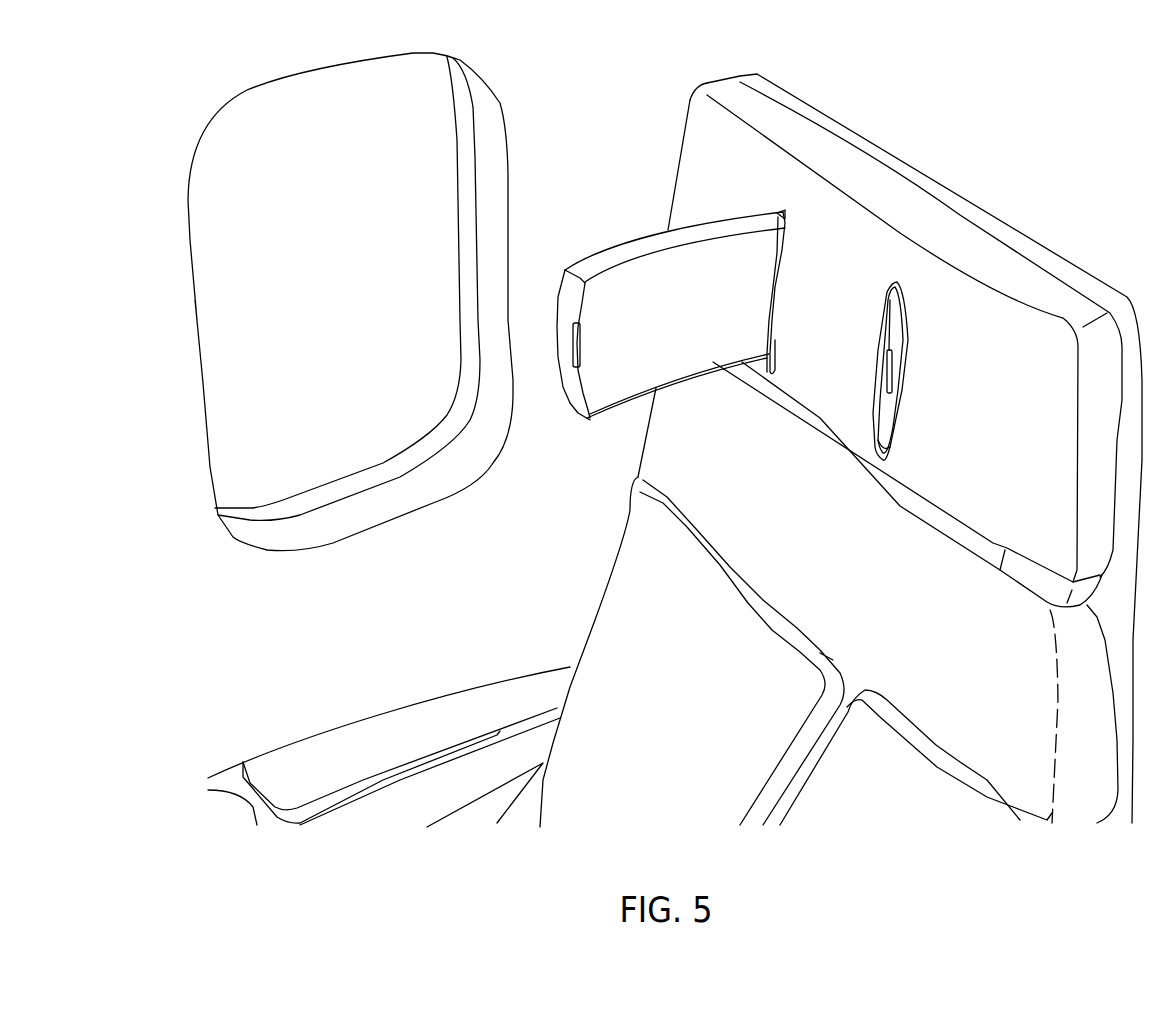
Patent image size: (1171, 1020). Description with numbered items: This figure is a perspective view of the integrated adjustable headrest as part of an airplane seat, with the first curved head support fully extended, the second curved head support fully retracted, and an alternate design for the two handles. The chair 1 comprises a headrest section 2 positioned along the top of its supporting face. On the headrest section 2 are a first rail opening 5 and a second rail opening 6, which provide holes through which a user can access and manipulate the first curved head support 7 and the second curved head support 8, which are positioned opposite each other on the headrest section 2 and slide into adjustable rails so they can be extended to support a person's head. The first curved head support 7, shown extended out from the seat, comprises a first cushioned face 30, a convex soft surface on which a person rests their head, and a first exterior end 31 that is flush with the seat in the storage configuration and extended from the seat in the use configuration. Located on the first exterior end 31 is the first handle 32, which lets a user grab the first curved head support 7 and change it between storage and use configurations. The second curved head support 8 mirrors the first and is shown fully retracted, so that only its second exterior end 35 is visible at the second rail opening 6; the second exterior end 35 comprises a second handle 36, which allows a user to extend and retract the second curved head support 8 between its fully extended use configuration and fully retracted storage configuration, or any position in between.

The chair 1 is at (945, 114).
The headrest section 2 is at (1102, 463).
The first rail opening 5 is at (777, 213).
The second rail opening 6 is at (885, 448).
The first curved head support 7 is at (654, 318).
The second curved head support 8 is at (889, 363).
The first cushioned face 30 is at (670, 355).
The first exterior end 31 is at (580, 416).
The first handle 32 is at (578, 347).
The second exterior end 35 is at (897, 302).
The second handle 36 is at (887, 377).